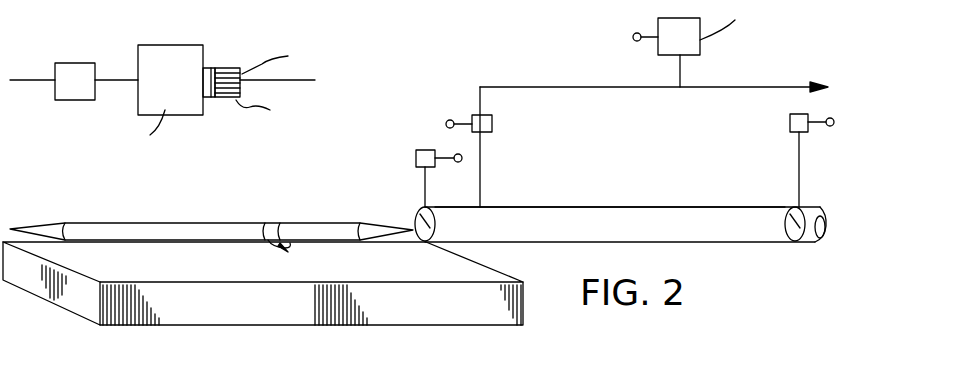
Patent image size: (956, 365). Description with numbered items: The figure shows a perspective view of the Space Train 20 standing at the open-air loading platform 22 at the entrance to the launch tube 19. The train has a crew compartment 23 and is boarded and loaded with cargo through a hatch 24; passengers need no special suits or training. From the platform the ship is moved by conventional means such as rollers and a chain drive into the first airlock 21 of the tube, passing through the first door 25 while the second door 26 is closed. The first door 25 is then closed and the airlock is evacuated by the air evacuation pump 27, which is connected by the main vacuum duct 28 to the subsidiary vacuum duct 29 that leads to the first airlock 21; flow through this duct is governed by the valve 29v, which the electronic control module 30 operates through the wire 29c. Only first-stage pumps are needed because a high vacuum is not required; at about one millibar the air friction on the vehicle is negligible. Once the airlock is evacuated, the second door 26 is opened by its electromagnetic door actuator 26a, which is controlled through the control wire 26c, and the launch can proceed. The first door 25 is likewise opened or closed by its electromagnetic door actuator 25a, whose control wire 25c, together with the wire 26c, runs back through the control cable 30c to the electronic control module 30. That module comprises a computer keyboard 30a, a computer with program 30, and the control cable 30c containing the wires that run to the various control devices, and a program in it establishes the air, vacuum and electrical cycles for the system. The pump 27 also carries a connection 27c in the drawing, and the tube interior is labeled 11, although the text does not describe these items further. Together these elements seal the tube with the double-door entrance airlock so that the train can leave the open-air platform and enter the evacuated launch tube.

The pipe 11 is at (638, 207).
The launch tube 19 is at (812, 242).
The Space Train 20 is at (108, 228).
The first airlock 21 is at (567, 213).
The open-air loading platform 22 is at (170, 267).
The crew compartment 23 is at (318, 222).
The hatch 24 is at (286, 249).
The first door of airlock system 25 is at (422, 212).
The electromagnetic door actuator 25a is at (416, 156).
The control wire 25c is at (455, 154).
The second door of airlock system 26 is at (790, 212).
The electromagnetic door actuator 26a is at (790, 123).
The control wire 26c is at (832, 126).
The air evacuation pump 27 is at (690, 50).
The pump connector 27c is at (634, 34).
The main vacuum duct 28 is at (738, 85).
The subsidiary vacuum duct 29 is at (482, 98).
The valve 29v is at (492, 124).
The wire 29c is at (448, 120).
The electronic control module 30 is at (182, 93).
The computer keyboard 30a is at (63, 63).
The control cable 30c is at (236, 68).